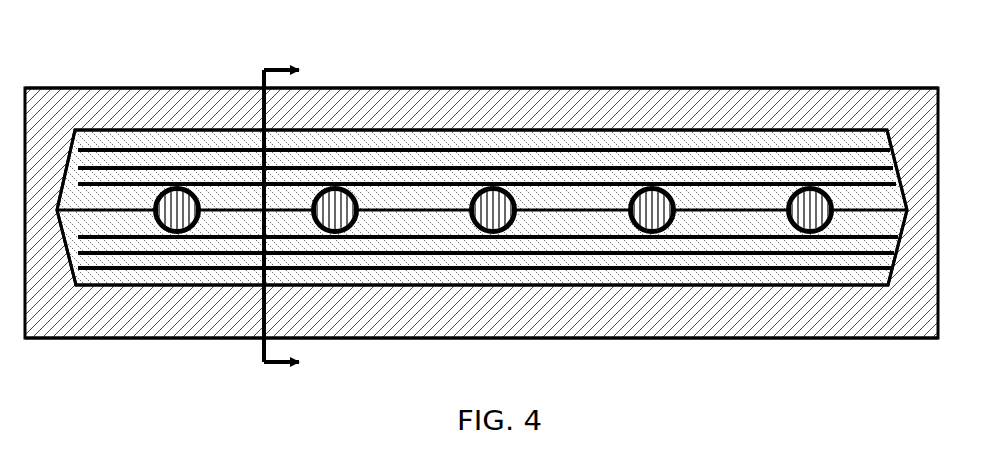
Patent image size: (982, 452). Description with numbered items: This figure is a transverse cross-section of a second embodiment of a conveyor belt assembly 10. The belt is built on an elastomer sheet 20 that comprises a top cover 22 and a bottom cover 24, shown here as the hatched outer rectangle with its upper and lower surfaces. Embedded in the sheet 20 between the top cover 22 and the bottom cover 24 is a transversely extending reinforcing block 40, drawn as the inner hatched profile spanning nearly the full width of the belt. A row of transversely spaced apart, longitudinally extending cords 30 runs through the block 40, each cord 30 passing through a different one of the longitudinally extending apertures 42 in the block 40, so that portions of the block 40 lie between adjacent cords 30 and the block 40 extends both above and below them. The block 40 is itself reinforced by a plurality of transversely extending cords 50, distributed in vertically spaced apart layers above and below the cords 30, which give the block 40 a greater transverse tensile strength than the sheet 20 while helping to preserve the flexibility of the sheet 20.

The conveyor belt assembly 10 is at (481, 203).
The elastomer sheet 20 is at (481, 218).
The top cover 22 is at (863, 100).
The bottom cover 24 is at (872, 340).
The longitudinally extending cords 30 is at (494, 147).
The reinforcing block 40 is at (186, 128).
The longitudinally extending apertures 42 is at (503, 187).
The transversely extending cords 50 is at (596, 148).